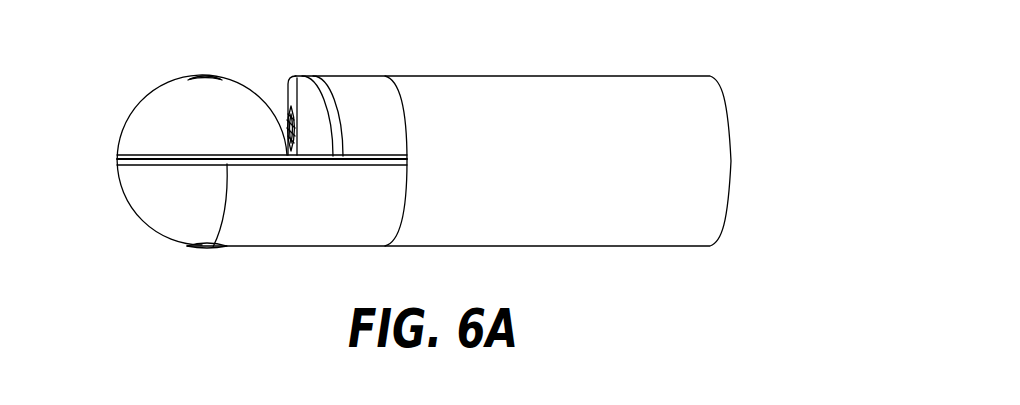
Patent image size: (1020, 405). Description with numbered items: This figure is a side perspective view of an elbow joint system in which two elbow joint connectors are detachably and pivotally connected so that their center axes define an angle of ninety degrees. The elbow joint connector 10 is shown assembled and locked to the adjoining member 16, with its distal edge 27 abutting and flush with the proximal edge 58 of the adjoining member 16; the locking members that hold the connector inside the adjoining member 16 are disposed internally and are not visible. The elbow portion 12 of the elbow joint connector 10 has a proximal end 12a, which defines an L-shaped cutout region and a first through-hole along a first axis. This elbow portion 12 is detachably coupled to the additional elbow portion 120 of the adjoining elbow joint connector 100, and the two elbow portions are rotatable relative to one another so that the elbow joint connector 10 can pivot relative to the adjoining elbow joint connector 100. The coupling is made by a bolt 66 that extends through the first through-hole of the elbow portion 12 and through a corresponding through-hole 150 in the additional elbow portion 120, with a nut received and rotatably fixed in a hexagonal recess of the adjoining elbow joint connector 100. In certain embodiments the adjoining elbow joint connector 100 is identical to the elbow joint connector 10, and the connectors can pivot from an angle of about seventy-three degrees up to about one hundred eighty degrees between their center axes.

The elbow joint connector 10 is at (370, 235).
The elbow portion 12 is at (230, 222).
The proximal end 12a is at (160, 215).
The adjoining member 16 is at (587, 92).
The distal edge 27 is at (401, 100).
The proximal edge 58 is at (408, 142).
The bolt 66 is at (207, 77).
The adjoining elbow joint connector 100 is at (147, 118).
The additional elbow portion 120 is at (243, 115).
The through-hole 150 is at (197, 77).